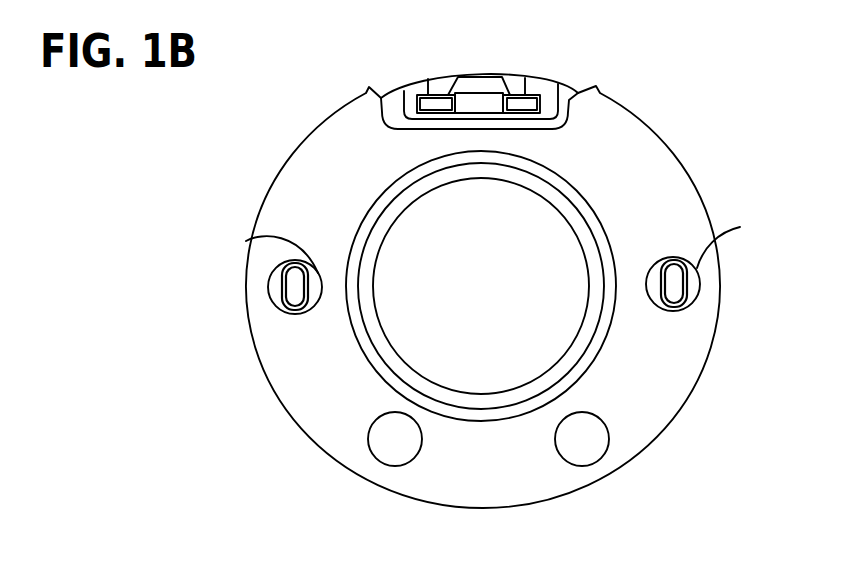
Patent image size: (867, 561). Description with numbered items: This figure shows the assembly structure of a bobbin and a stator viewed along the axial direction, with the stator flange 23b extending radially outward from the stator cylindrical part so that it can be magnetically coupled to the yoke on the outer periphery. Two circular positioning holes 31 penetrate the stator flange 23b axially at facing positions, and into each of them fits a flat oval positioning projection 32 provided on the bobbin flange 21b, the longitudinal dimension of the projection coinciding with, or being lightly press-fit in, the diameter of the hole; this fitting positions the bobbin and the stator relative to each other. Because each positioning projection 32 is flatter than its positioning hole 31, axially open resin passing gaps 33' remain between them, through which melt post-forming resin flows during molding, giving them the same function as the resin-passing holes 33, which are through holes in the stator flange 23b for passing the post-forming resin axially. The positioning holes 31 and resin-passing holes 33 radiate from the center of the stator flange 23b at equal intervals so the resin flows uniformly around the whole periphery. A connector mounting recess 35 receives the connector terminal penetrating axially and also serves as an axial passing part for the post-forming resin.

The bobbin flange 21b is at (391, 100).
The connector mounting recess 35 is at (569, 97).
The stator flange 23b is at (657, 154).
The resin passing gap 33' is at (476, 236).
The positioning hole 31 is at (270, 300).
The positioning projection 32 is at (291, 313).
The resin-passing hole 33 is at (494, 470).